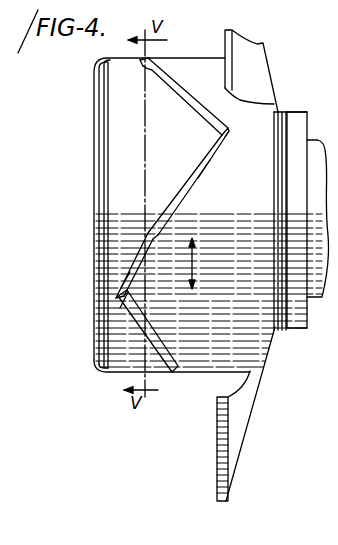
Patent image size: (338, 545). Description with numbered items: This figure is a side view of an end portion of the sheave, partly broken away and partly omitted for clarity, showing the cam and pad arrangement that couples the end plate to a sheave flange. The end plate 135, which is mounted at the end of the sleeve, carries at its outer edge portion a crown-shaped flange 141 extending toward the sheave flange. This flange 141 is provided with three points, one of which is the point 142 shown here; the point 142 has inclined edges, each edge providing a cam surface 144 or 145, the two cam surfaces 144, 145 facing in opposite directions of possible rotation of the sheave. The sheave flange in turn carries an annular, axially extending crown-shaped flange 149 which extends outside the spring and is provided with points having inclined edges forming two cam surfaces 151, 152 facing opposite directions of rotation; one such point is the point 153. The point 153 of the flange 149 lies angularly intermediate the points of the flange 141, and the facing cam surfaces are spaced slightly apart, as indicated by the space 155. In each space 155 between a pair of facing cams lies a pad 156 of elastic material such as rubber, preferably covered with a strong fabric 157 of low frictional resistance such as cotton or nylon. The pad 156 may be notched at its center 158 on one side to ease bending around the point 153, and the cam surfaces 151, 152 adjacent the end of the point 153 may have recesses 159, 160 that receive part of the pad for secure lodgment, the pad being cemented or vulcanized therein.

The end plate 135 is at (93, 350).
The crown-shaped flange 141 is at (152, 151).
The point 142 is at (214, 136).
The cam surface 144 is at (174, 201).
The cam surface 145 is at (172, 87).
The crown-shaped flange 149 is at (203, 373).
The cam surface 151 is at (171, 208).
The cam surface 152 is at (250, 333).
The point 153 is at (101, 323).
The space 155 is at (189, 192).
The pad 156 is at (138, 257).
The fabric 157 is at (124, 279).
The notch 158 is at (122, 300).
The recess 159 is at (138, 280).
The recess 160 is at (136, 311).